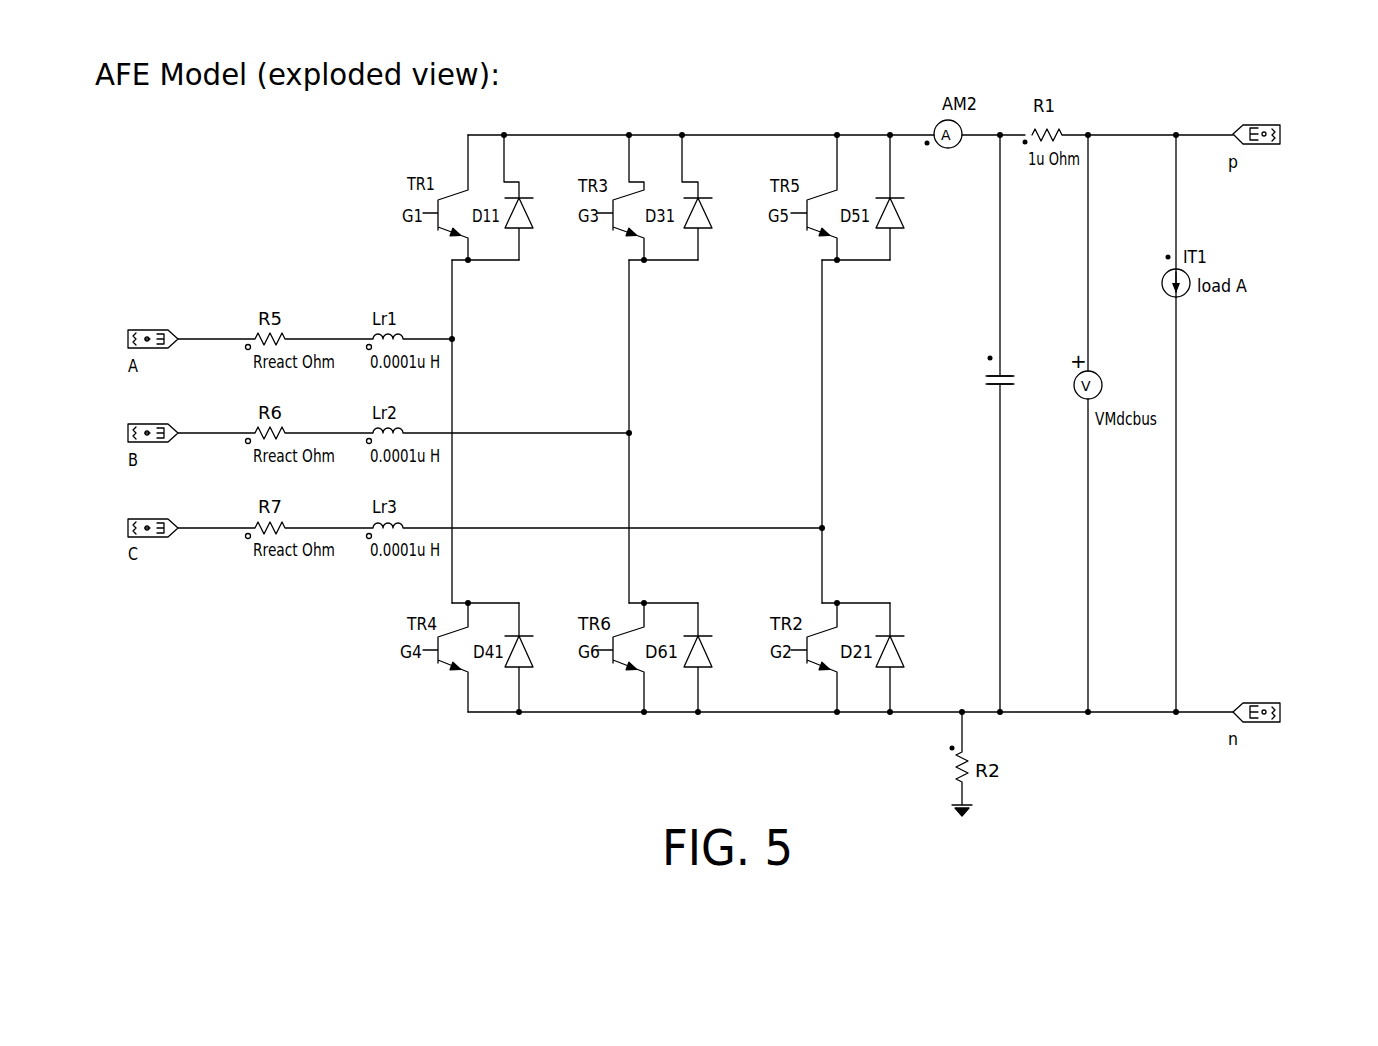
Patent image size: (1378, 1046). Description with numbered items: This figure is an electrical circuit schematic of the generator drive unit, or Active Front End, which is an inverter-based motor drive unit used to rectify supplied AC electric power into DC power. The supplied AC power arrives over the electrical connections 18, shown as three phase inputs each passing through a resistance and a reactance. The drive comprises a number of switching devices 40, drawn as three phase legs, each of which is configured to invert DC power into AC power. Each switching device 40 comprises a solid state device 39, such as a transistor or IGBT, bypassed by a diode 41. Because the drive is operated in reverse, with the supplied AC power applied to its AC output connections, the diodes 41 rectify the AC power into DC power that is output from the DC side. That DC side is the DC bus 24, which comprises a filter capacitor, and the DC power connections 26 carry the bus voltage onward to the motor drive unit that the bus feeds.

The electrical connections 18 is at (112, 320).
The DC bus 24 is at (1005, 375).
The DC power connections 26 is at (1298, 110).
The solid state device 39 is at (439, 663).
The switching device 40 is at (810, 690).
The diode 41 is at (527, 633).